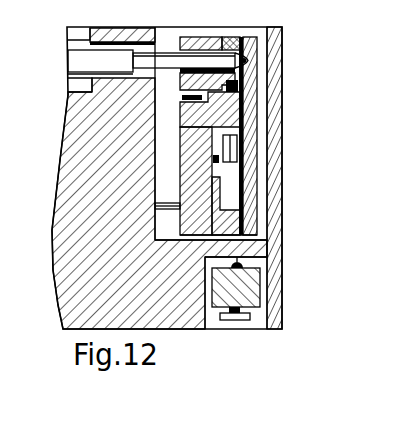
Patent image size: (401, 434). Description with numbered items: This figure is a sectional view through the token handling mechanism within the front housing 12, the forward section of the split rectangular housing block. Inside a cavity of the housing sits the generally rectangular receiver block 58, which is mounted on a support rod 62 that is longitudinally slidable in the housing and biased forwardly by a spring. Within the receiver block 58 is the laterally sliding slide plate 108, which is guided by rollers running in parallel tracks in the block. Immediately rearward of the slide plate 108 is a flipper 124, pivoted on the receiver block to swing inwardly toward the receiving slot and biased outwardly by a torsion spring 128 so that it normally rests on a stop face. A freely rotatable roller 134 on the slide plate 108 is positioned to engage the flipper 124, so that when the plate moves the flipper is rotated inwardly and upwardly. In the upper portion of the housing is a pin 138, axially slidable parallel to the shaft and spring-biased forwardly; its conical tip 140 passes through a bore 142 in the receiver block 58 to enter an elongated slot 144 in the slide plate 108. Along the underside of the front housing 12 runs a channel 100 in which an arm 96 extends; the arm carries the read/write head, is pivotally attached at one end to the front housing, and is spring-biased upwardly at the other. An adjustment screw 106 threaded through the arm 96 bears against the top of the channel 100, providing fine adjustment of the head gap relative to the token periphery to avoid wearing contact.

The front housing 12 is at (75, 124).
The pin 138 is at (177, 58).
The conical tip 140 is at (248, 60).
The bore 142 is at (195, 38).
The elongated slot 144 is at (236, 36).
The flipper 124 is at (247, 143).
The slide plate 108 is at (238, 80).
The receiver block 58 is at (183, 223).
The spring 128 is at (180, 127).
The roller 134 is at (226, 160).
The support rod 62 is at (158, 199).
The arm 96 is at (250, 291).
The channel 100 is at (243, 258).
The adjustment screw 106 is at (240, 318).